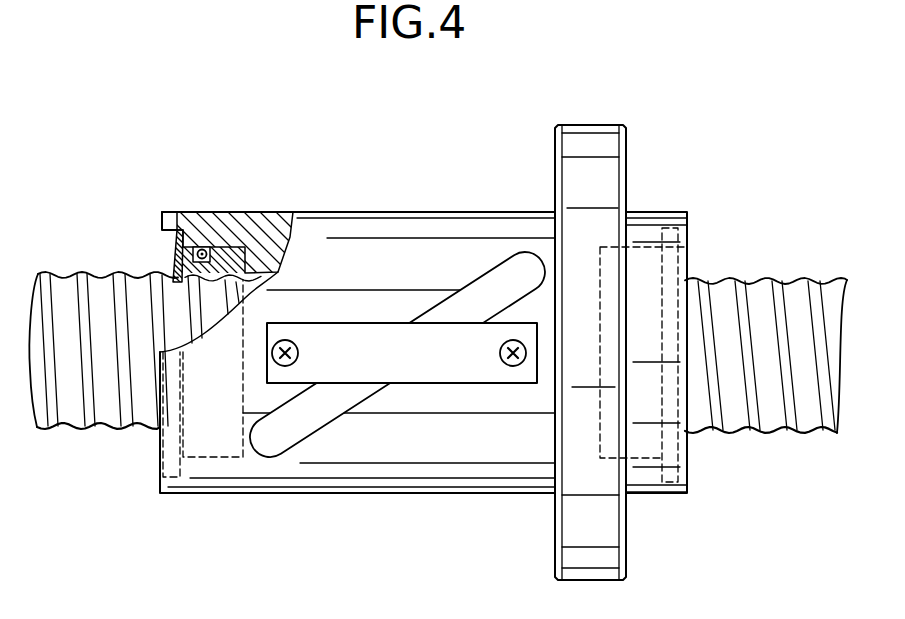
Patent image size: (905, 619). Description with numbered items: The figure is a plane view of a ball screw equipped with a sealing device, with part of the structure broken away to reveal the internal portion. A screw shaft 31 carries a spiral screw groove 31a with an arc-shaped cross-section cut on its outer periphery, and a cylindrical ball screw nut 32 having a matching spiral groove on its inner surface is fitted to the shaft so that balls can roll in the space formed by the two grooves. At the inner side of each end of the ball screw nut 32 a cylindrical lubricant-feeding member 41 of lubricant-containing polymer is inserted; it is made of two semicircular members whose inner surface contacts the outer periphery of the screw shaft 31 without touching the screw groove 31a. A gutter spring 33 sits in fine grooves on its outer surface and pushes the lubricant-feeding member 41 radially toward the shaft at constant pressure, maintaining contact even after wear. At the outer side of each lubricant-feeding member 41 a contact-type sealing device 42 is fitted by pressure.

The screw shaft 31 is at (61, 247).
The screw groove 31a is at (115, 414).
The ball screw nut 32 is at (425, 232).
The gutter spring 33 is at (202, 246).
The lubricant-feeding member 41 is at (233, 252).
The contact-type sealing device 42 is at (175, 253).